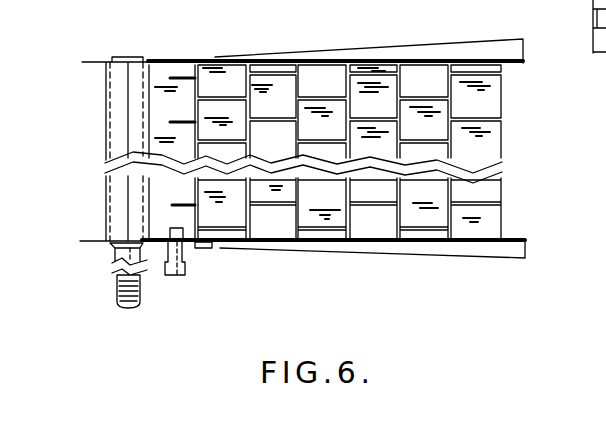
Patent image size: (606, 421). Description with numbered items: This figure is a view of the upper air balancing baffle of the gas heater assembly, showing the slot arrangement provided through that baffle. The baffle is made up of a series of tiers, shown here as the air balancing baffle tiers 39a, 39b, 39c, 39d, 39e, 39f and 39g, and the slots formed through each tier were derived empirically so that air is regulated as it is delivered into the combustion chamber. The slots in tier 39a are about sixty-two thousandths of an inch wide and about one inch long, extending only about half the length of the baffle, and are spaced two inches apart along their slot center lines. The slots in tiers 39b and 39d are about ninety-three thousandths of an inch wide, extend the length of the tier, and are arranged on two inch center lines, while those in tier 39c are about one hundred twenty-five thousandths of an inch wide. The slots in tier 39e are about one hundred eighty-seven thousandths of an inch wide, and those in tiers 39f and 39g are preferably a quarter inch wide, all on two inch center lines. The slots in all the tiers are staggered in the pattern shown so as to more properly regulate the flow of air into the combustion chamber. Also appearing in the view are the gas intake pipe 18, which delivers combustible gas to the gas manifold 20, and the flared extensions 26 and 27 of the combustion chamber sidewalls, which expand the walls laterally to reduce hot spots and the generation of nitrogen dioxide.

The gas intake pipe 18 is at (118, 300).
The gas manifold 20 is at (110, 103).
The flared extension 26 is at (524, 259).
The flared extension 27 is at (522, 48).
The air balancing baffle tier 39a is at (162, 72).
The air balancing baffle tier 39b is at (216, 68).
The air balancing baffle tier 39c is at (262, 65).
The air balancing baffle tier 39d is at (318, 72).
The air balancing baffle tier 39e is at (375, 65).
The air balancing baffle tier 39f is at (415, 72).
The air balancing baffle tier 39g is at (460, 67).